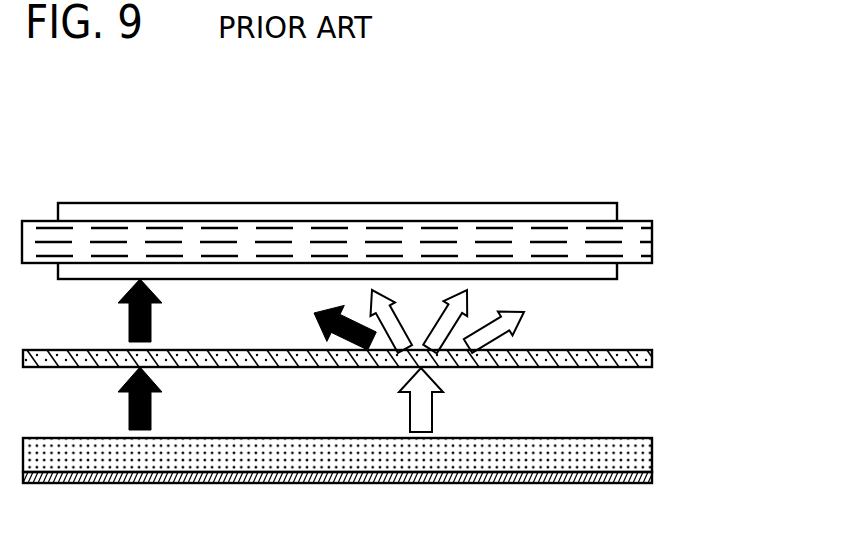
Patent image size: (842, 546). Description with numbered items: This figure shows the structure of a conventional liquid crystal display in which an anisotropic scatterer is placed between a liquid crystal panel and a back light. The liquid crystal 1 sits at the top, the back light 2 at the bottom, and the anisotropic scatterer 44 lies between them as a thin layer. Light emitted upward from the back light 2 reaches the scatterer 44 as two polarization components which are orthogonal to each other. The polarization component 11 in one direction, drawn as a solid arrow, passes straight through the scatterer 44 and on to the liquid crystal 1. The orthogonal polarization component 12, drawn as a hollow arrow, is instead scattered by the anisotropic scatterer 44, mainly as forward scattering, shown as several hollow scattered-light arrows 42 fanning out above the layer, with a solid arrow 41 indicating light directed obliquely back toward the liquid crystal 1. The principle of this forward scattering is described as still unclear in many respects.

The liquid crystal 1 is at (652, 237).
The back light 2 is at (652, 450).
The polarization component (S-polarization) 11 is at (140, 430).
The polarization component (P-polarization) 12 is at (421, 420).
The reflected light 41 is at (317, 312).
The scattered light 42 is at (471, 293).
The scattering layer 44 is at (652, 357).